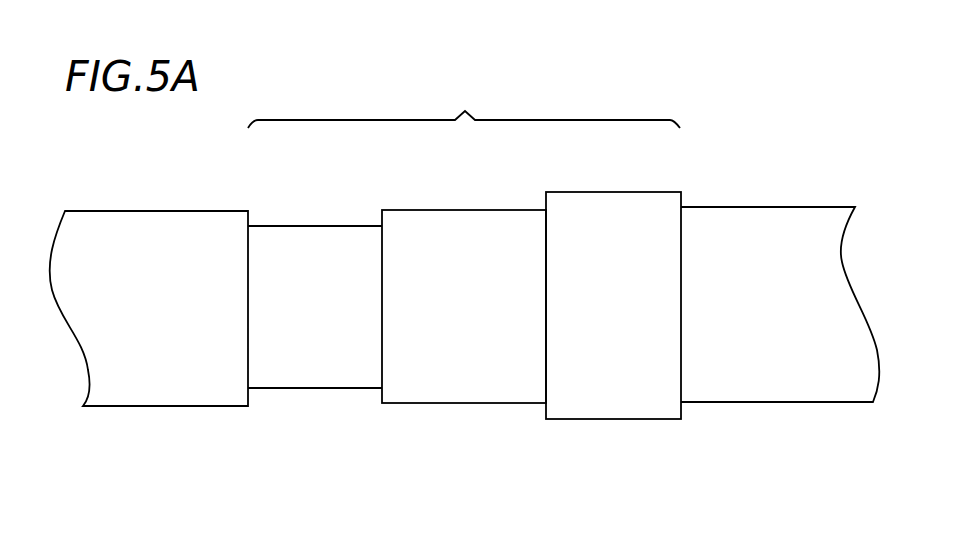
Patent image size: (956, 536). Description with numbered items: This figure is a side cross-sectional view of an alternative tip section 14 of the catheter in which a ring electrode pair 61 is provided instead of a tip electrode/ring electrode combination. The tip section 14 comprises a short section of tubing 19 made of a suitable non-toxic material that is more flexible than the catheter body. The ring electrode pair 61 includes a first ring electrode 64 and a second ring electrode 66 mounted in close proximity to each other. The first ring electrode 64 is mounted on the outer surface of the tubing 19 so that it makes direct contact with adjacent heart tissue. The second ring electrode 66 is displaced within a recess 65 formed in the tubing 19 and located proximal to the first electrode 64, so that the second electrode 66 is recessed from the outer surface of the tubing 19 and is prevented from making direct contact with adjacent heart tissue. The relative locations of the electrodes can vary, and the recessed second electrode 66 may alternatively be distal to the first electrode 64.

The tip section 14 is at (170, 426).
The tubing 19 is at (756, 231).
The ring electrode pair 61 is at (464, 100).
The first ring electrode 64 is at (612, 400).
The recess 65 is at (380, 211).
The second ring electrode 66 is at (310, 372).